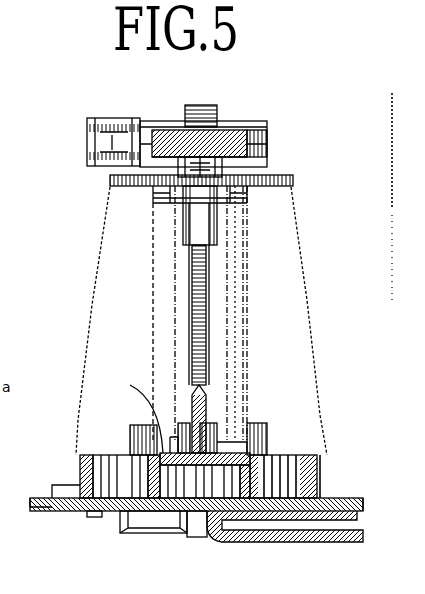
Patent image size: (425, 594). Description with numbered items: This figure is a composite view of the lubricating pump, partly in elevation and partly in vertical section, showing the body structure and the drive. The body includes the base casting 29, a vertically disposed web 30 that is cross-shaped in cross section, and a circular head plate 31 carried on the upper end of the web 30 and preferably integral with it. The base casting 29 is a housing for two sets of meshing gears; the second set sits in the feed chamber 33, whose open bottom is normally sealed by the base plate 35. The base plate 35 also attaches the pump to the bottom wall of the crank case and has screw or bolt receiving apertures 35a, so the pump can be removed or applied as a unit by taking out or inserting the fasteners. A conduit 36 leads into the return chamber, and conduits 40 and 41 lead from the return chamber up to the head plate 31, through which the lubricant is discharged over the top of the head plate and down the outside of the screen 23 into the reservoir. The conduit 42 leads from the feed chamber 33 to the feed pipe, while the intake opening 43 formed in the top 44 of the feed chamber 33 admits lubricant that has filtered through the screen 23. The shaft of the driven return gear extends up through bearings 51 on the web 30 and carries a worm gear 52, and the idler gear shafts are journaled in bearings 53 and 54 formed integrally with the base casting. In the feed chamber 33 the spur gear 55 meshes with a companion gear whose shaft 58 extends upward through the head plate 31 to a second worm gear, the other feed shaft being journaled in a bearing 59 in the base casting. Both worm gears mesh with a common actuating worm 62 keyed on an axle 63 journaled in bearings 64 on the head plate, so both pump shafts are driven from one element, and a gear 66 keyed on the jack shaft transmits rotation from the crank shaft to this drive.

The screen 23 is at (313, 317).
The base casting 29 is at (85, 513).
The vertically disposed web 30 is at (237, 278).
The circular head plate 31 is at (277, 177).
The feed chamber 33 is at (252, 473).
The base plate 35 is at (118, 513).
The screw or bolt receiving apertures 35a is at (55, 493).
The conduit 36 is at (165, 533).
The conduit 40 is at (180, 307).
The conduit 41 is at (242, 315).
The conduit 42 is at (342, 500).
The intake opening 43 is at (142, 409).
The top of the intake chamber 44 is at (247, 407).
The bearings 51 is at (187, 227).
The worm gear 52 is at (253, 121).
The bearing 53 is at (267, 432).
The bearing 54 is at (138, 433).
The spur gear 55 is at (193, 535).
The shaft 58 is at (207, 265).
The bearing 59 is at (217, 400).
The actuating worm 62 is at (208, 106).
The axle 63 is at (266, 135).
The bearings 64 is at (148, 185).
The gear 66 is at (115, 118).